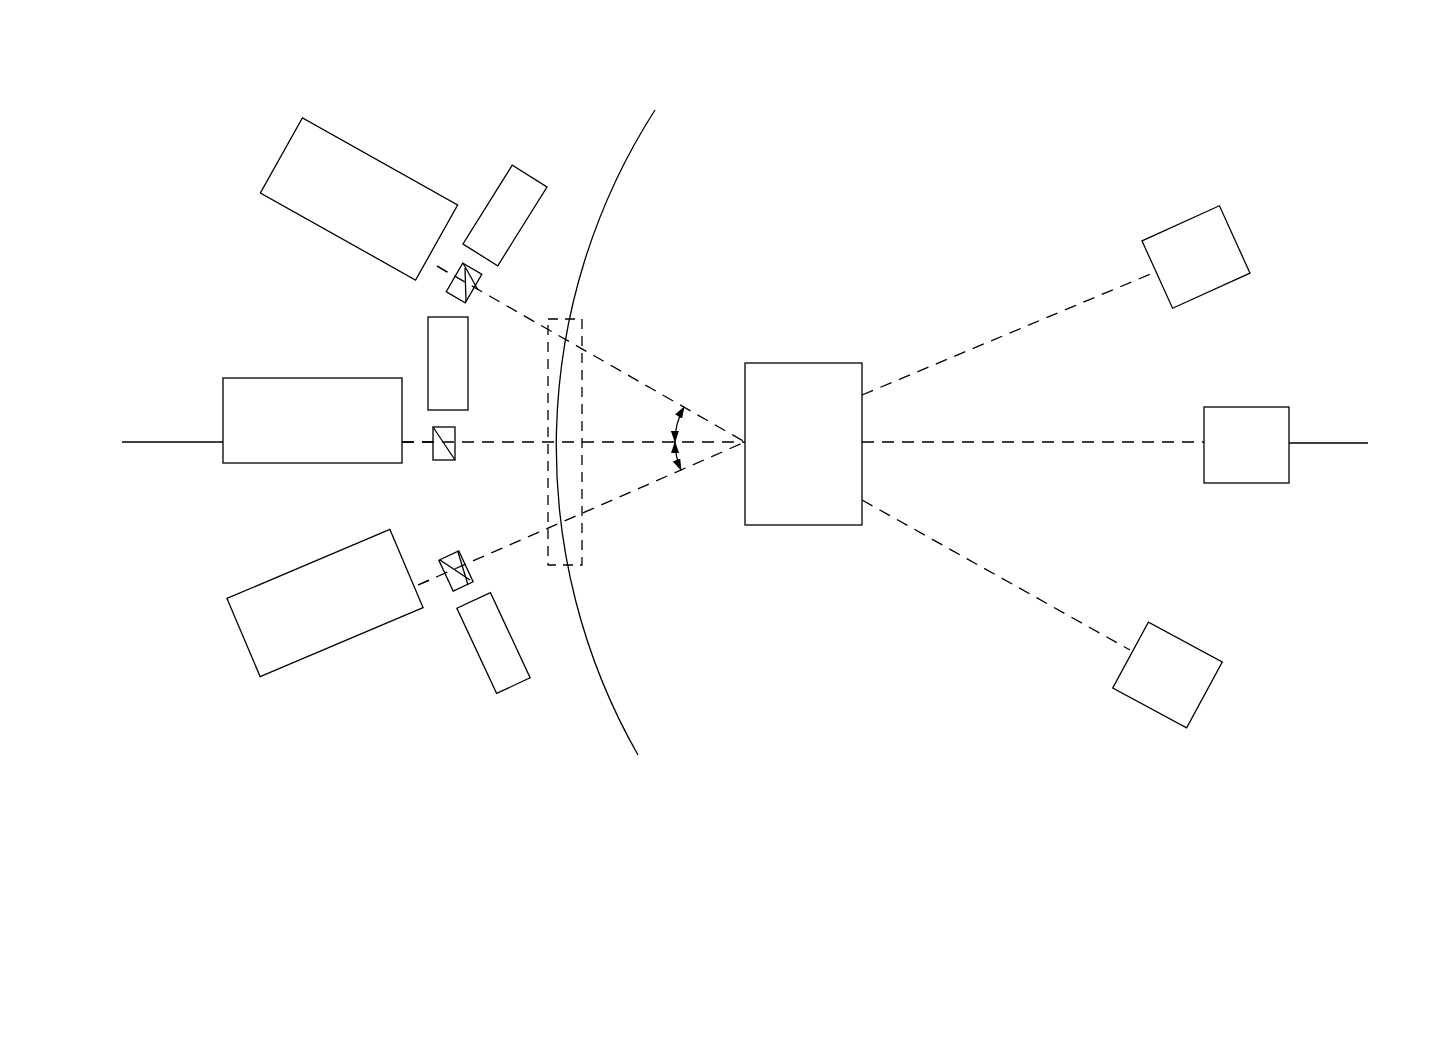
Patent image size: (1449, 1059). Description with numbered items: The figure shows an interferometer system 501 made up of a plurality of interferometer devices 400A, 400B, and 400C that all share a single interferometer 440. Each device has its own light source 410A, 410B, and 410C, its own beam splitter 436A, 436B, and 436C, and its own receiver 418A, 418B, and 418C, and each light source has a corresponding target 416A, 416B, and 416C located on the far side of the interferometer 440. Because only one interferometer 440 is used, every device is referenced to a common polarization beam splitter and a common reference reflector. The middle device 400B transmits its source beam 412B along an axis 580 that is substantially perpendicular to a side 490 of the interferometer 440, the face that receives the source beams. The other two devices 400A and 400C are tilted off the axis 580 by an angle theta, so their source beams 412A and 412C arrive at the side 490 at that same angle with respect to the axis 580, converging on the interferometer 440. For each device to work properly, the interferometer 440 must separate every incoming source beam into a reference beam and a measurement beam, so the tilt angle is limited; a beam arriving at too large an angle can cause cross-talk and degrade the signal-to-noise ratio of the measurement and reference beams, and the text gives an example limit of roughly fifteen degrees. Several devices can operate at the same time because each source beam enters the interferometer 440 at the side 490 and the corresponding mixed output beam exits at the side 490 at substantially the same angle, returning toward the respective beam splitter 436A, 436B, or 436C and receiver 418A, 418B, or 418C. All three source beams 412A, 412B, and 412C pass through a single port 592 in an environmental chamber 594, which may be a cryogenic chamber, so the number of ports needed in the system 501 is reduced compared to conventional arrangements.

The interferometer system 501 is at (775, 120).
The interferometer device 400A is at (262, 150).
The interferometer device 400B is at (193, 398).
The interferometer device 400C is at (233, 636).
The light source 410A is at (362, 151).
The light source 410B is at (320, 463).
The light source 410C is at (332, 648).
The source beam 412A is at (450, 268).
The source beam 412B is at (425, 443).
The source beam 412C is at (428, 585).
The receiver 418A is at (528, 172).
The receiver 418B is at (468, 345).
The receiver 418C is at (513, 635).
The beam splitter 436A is at (481, 276).
The beam splitter 436B is at (455, 435).
The beam splitter 436C is at (462, 555).
The target 416A is at (1147, 707).
The target 416B is at (1243, 407).
The target 416C is at (1192, 213).
The interferometer 440 is at (792, 358).
The side 490 is at (745, 478).
The axis 580 is at (193, 443).
The port 592 is at (585, 342).
The environmental chamber 594 is at (605, 193).